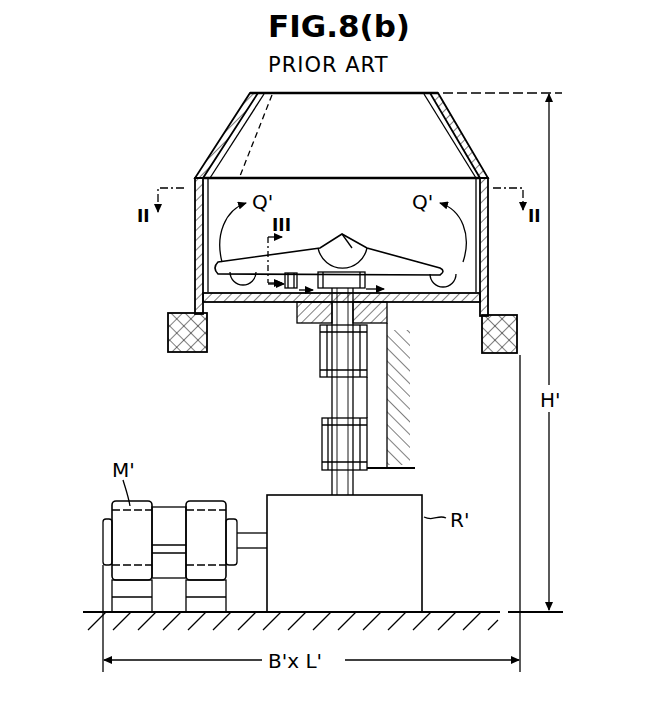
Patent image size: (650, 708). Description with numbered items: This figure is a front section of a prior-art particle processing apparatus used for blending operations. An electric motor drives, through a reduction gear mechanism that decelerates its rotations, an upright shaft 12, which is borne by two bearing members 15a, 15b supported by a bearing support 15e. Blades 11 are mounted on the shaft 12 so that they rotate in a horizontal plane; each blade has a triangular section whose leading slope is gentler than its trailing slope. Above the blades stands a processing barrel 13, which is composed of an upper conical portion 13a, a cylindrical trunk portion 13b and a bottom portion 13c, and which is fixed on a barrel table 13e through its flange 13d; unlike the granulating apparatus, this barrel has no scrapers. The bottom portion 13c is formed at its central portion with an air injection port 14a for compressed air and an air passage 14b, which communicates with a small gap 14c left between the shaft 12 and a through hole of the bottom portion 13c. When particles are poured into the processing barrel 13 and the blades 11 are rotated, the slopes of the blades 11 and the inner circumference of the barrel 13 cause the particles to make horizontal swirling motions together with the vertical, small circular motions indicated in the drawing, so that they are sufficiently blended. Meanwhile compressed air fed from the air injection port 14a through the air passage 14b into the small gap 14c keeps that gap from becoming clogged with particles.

The blade 11 is at (225, 263).
The shaft 12 is at (340, 400).
The processing barrel 13 is at (323, 228).
The upper conical portion 13a is at (450, 110).
The cylindrical trunk portion 13b is at (487, 263).
The bottom portion 13c is at (206, 316).
The flange 13d is at (492, 318).
The barrel table 13e is at (170, 340).
The air injection port 14a is at (288, 306).
The air passage 14b is at (372, 310).
The small gap 14c is at (378, 296).
The bearing member 15a is at (332, 366).
The bearing member 15b is at (335, 441).
The bearing support 15e is at (390, 428).